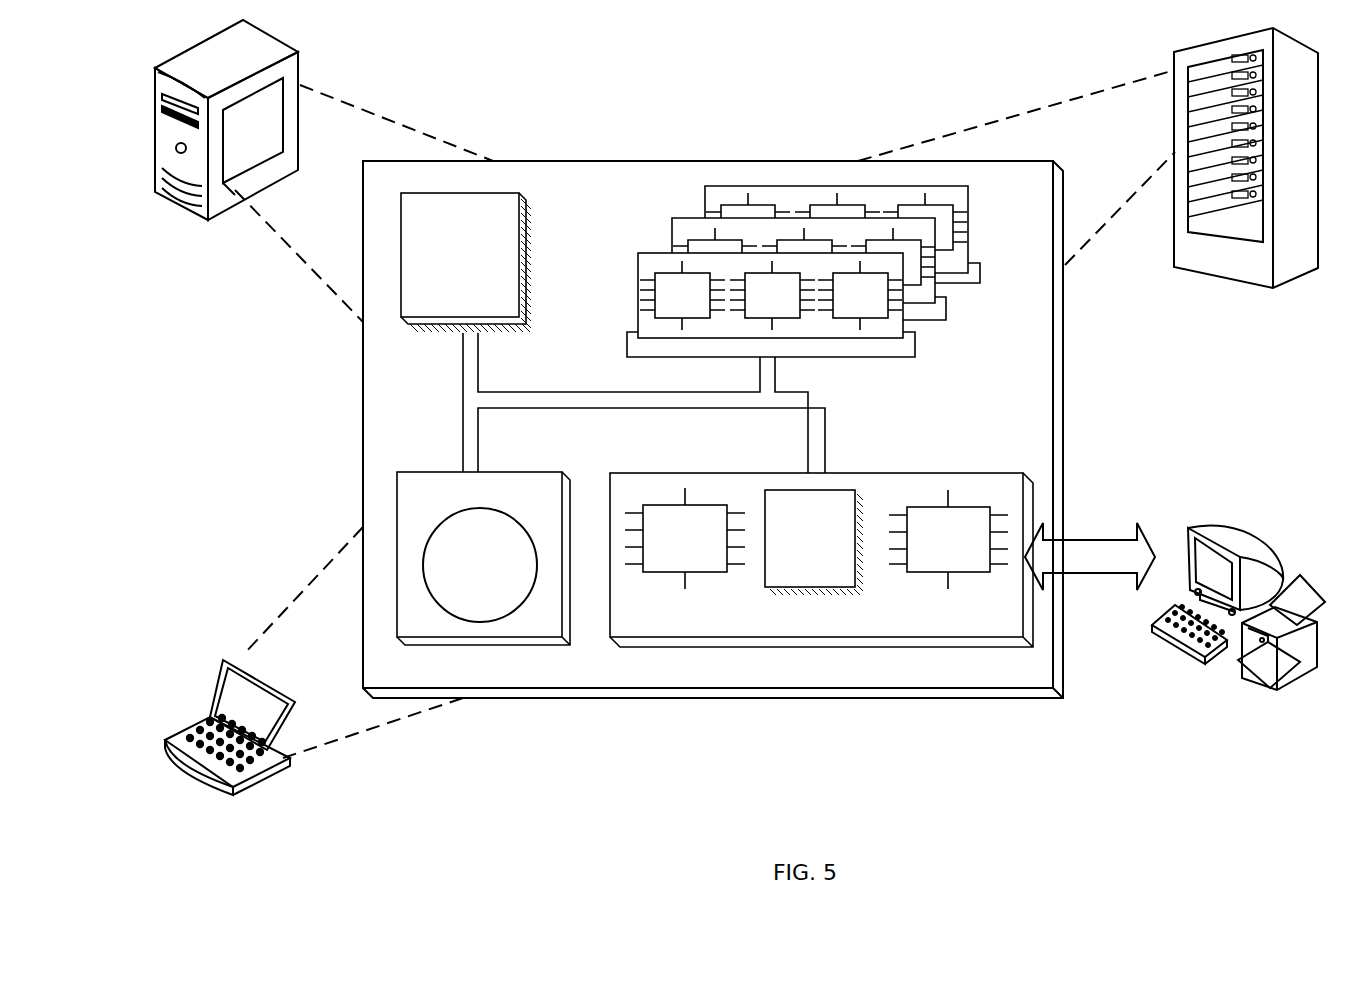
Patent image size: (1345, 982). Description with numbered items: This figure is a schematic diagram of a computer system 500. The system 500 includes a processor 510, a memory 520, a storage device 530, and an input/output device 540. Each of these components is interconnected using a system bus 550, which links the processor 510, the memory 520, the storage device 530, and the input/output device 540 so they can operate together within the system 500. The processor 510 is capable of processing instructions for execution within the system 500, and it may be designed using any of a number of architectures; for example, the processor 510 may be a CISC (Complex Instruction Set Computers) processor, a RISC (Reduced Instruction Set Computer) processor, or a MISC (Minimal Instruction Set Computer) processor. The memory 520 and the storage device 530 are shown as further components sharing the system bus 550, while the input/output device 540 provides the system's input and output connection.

The system 500 is at (548, 88).
The processor 510 is at (466, 262).
The memory 520 is at (975, 321).
The storage device 530 is at (483, 558).
The input/output device 540 is at (1187, 530).
The system bus 550 is at (646, 409).